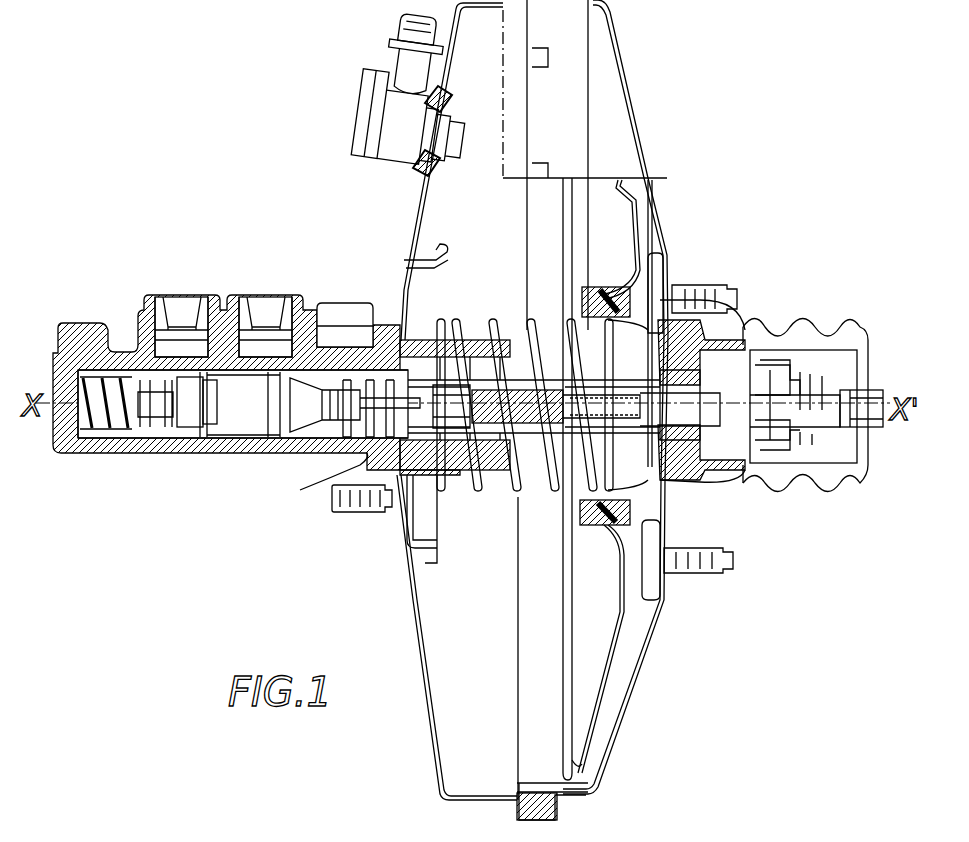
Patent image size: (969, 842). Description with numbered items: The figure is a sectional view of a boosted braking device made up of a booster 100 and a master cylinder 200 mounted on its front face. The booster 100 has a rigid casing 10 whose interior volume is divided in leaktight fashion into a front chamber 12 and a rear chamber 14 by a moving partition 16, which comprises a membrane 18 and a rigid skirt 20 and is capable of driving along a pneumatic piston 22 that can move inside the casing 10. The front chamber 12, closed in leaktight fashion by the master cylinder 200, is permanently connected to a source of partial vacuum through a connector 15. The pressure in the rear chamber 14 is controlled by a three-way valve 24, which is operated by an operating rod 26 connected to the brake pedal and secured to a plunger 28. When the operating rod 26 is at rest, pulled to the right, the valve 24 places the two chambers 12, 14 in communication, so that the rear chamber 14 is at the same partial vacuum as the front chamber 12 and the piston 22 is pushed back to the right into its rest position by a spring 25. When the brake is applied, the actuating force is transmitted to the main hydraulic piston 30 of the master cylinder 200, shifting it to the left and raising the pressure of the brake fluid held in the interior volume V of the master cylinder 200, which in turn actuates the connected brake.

The booster 100 is at (652, 97).
The master cylinder 200 is at (213, 462).
The rigid casing 10 is at (420, 197).
The front chamber 12 is at (490, 683).
The rear chamber 14 is at (613, 700).
The connector 15 is at (375, 100).
The moving partition 16 is at (613, 660).
The membrane 18 is at (546, 783).
The rigid skirt 20 is at (572, 767).
The pneumatic piston 22 is at (580, 517).
The three-way valve 24 is at (784, 429).
The spring 25 is at (493, 318).
The operating rod 26 is at (882, 385).
The plunger 28 is at (743, 327).
The main hydraulic piston 30 is at (540, 357).
The interior volume V is at (365, 462).